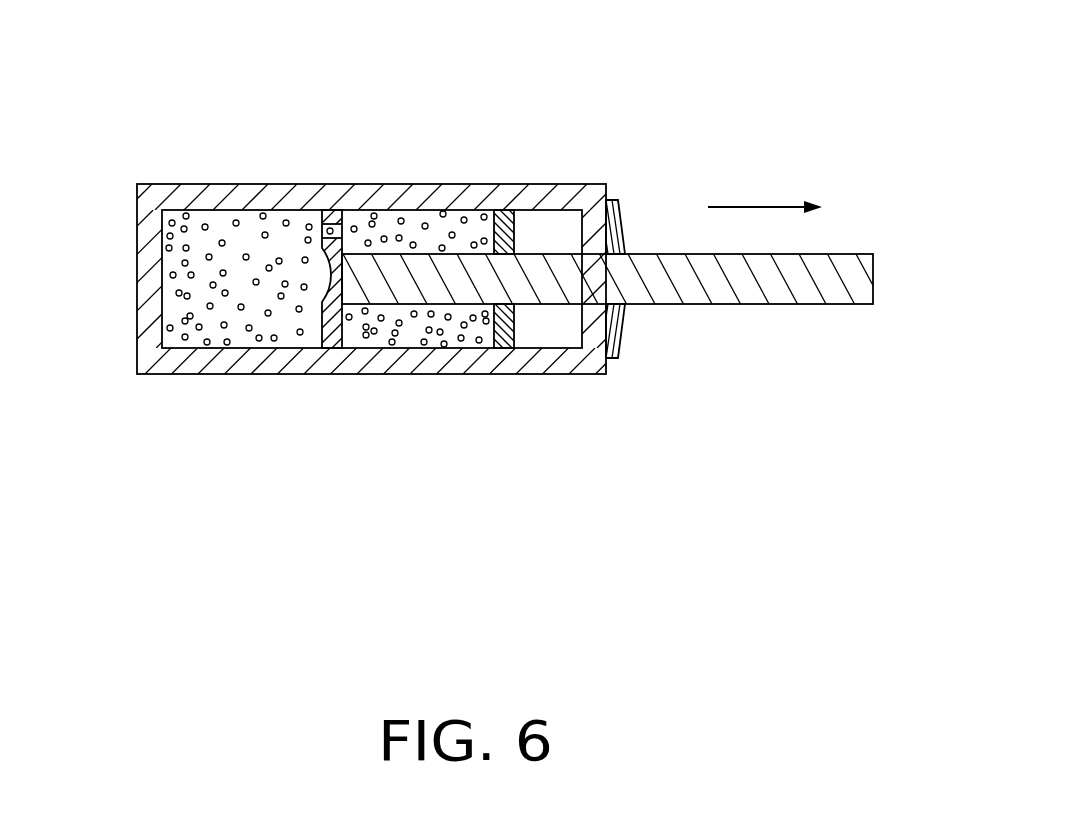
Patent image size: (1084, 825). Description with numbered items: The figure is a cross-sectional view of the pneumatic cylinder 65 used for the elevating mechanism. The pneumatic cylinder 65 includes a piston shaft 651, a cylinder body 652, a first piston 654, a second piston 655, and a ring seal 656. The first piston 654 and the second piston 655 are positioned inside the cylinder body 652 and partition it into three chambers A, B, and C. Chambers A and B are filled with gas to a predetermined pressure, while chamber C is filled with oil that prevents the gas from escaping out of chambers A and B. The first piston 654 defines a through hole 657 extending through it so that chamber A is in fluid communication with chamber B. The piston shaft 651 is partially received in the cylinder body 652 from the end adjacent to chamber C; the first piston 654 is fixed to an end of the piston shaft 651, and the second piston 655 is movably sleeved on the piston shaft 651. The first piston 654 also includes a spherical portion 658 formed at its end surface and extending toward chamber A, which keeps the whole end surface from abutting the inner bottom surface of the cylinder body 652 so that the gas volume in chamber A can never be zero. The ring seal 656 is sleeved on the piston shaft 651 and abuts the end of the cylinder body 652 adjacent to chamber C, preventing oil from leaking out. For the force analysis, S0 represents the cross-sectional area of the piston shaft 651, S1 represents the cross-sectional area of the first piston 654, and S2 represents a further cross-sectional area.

The pneumatic cylinder 65 is at (146, 100).
The piston shaft 651 is at (767, 295).
The cylinder body 652 is at (204, 362).
The first piston 654 is at (332, 342).
The second piston 655 is at (505, 212).
The ring seal 656 is at (620, 318).
The through hole 657 is at (344, 230).
The spherical portion 658 is at (310, 265).
The area of a cross-section of the piston shaft S0 is at (873, 288).
The area of a cross-section of the first piston S1 is at (322, 325).
The area of a cross-section S2 is at (343, 323).